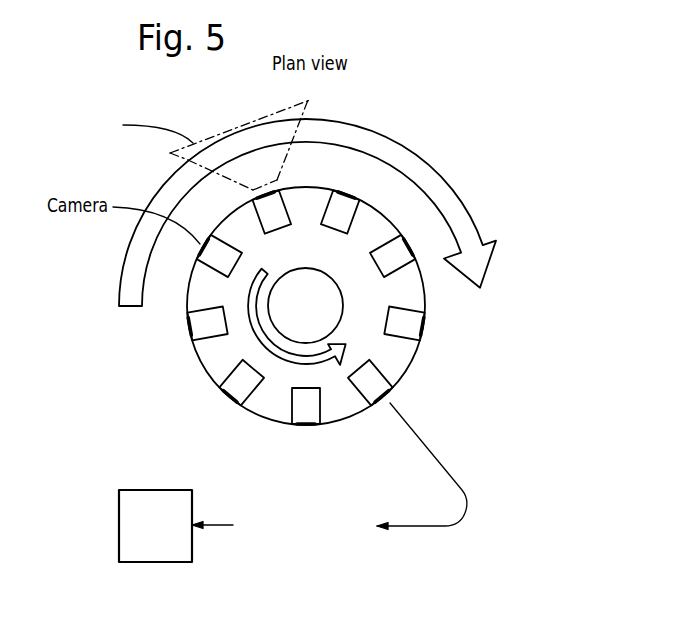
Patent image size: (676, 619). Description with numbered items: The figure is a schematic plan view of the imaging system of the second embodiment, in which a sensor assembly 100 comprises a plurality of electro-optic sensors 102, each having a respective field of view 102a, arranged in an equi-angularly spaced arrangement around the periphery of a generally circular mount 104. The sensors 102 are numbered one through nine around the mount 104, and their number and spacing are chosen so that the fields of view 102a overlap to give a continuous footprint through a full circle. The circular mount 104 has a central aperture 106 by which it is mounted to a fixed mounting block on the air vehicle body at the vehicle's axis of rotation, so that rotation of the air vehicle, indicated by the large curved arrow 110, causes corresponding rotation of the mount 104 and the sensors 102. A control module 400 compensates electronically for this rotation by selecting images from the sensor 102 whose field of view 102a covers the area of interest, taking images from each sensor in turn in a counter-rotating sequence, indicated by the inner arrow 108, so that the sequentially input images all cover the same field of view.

The sensor assembly 100 is at (430, 376).
The electro-optic sensor 102 is at (332, 207).
The field of view 102a is at (310, 110).
The circular mount 104 is at (305, 307).
The central aperture 106 is at (331, 286).
The counter rotation of image data capture 108 is at (253, 334).
The aircraft rotation 110 is at (463, 204).
The control module 400 is at (119, 521).